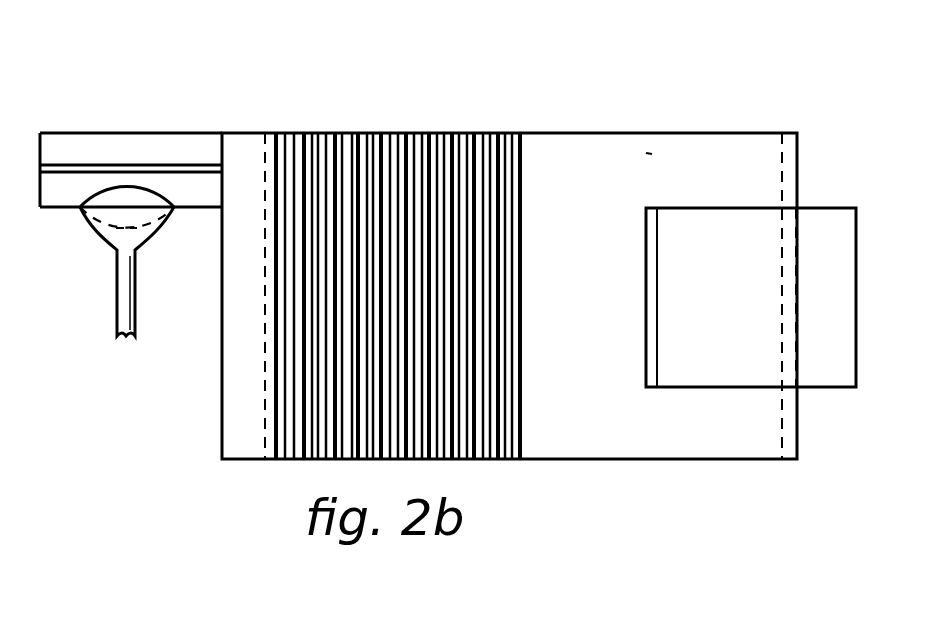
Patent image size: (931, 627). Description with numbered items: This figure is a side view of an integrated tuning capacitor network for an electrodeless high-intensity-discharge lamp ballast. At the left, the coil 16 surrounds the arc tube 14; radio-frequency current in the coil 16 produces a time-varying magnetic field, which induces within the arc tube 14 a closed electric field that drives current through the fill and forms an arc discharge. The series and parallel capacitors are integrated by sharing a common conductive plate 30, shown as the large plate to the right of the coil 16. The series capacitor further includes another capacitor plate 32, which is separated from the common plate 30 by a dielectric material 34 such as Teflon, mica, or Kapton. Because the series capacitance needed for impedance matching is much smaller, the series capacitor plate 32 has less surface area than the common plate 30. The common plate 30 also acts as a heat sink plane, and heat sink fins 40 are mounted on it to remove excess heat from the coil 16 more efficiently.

The arc tube 14 is at (147, 115).
The coil 16 is at (59, 207).
The common conductive plate 30 is at (509, 296).
The series capacitor plate 32 is at (751, 297).
The dielectric material 34 is at (645, 243).
The heat sink fins 40 is at (343, 133).